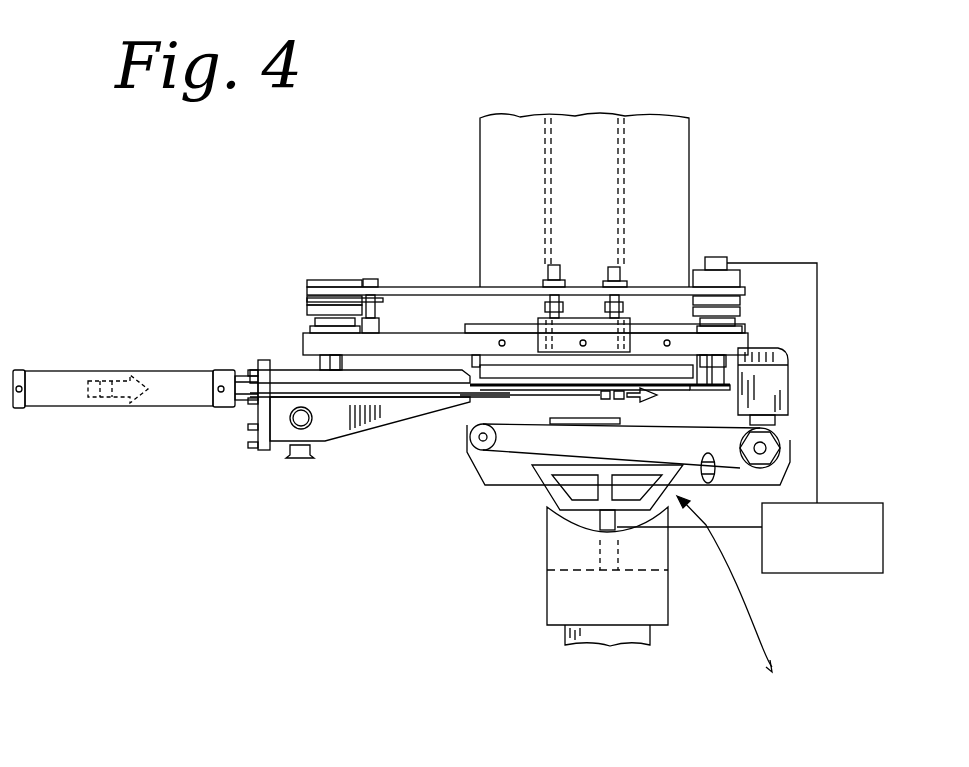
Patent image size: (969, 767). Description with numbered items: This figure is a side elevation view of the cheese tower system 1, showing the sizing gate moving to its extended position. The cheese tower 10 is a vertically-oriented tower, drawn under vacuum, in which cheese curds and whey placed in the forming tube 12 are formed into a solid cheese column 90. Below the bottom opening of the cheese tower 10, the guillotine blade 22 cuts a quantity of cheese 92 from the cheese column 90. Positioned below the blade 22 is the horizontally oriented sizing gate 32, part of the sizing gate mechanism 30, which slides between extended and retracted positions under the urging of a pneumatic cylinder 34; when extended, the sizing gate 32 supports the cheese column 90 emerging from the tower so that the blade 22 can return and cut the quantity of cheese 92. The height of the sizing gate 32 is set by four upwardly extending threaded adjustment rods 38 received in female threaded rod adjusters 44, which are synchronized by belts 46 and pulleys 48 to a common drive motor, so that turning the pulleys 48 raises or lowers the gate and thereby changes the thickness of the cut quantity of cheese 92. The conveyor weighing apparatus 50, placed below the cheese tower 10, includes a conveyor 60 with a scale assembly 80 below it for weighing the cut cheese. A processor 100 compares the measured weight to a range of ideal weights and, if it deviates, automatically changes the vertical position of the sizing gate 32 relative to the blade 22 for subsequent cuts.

The cheese tower system 1 is at (724, 149).
The cheese tower 10 is at (690, 178).
The forming tube 12 is at (625, 142).
The guillotine blade 22 is at (470, 402).
The sizing gate mechanism 30 is at (222, 339).
The sizing gate 32 is at (480, 395).
The pneumatic cylinder 34 is at (50, 368).
The threaded adjustment rods 38 is at (330, 367).
The rod adjusters 44 is at (340, 283).
The belts 46 is at (440, 285).
The pulleys 48 is at (745, 282).
The conveyor weighing apparatus 50 is at (466, 551).
The conveyor 60 is at (790, 470).
The scale assembly 80 is at (740, 595).
The cheese column 90 is at (625, 212).
The quantity of cheese 92 is at (552, 400).
The processor 100 is at (806, 553).